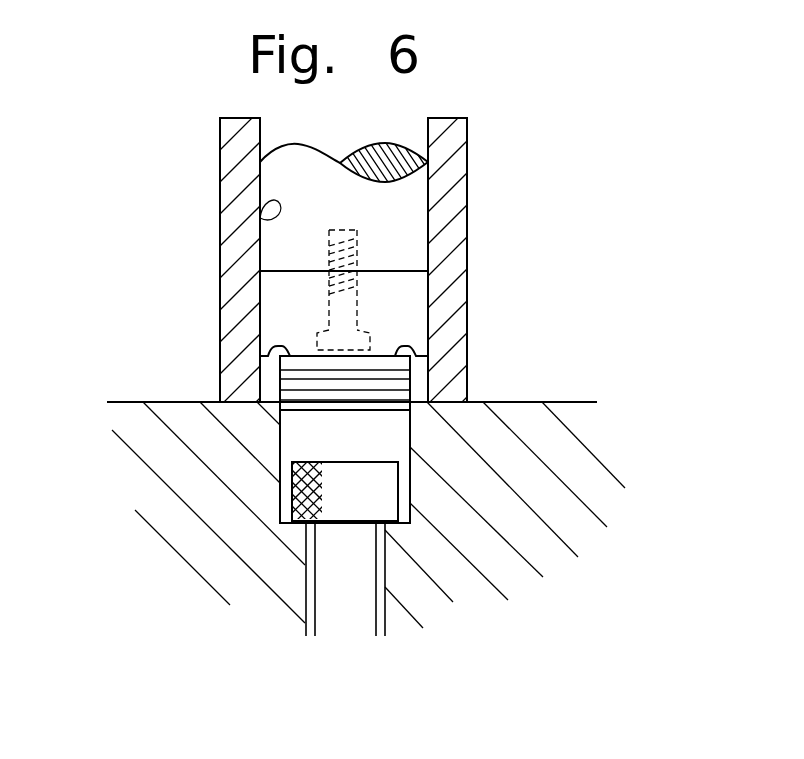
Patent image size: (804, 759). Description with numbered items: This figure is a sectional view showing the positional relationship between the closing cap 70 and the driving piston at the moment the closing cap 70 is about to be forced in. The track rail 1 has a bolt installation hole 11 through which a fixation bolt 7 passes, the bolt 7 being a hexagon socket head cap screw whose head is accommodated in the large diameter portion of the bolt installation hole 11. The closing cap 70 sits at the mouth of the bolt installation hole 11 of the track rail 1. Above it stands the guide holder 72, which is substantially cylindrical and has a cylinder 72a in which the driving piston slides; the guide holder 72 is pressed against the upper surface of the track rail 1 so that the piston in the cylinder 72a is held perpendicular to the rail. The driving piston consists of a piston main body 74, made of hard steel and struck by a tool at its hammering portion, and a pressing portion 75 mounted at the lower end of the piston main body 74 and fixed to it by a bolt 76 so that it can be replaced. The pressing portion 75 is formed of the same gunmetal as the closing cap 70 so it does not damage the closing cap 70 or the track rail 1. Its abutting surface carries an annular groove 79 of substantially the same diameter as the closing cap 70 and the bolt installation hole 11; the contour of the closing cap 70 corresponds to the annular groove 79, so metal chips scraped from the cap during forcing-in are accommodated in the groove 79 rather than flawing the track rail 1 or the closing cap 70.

The track rail 1 is at (581, 396).
The fixation bolt 7 is at (383, 492).
The bolt installation hole 11 is at (280, 443).
The closing cap 70 is at (395, 382).
The guide holder 72 is at (467, 167).
The cylinder 72a is at (260, 218).
The piston main body 74 is at (412, 230).
The pressing portion 75 is at (412, 303).
The bolt 76 is at (329, 316).
The annular groove 79 is at (276, 354).